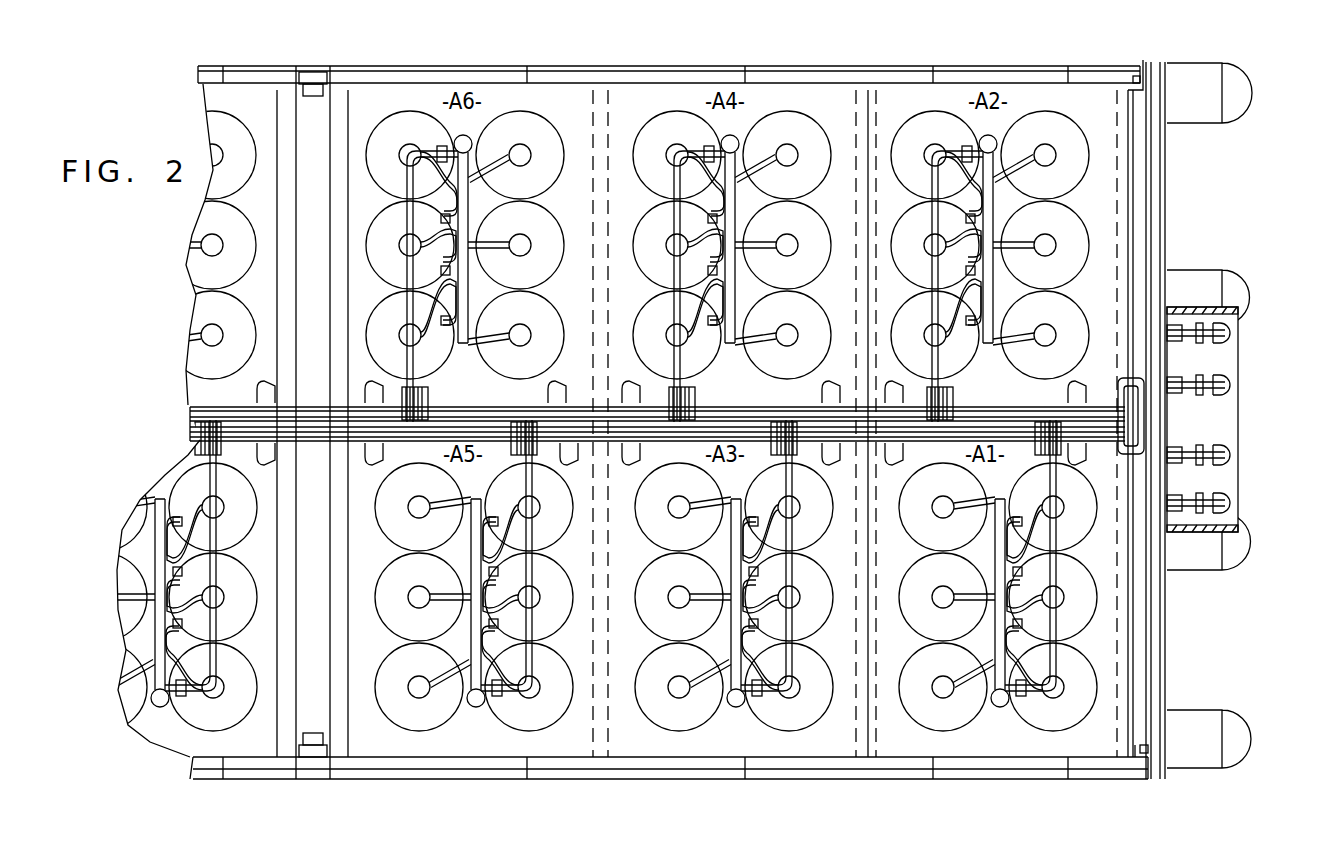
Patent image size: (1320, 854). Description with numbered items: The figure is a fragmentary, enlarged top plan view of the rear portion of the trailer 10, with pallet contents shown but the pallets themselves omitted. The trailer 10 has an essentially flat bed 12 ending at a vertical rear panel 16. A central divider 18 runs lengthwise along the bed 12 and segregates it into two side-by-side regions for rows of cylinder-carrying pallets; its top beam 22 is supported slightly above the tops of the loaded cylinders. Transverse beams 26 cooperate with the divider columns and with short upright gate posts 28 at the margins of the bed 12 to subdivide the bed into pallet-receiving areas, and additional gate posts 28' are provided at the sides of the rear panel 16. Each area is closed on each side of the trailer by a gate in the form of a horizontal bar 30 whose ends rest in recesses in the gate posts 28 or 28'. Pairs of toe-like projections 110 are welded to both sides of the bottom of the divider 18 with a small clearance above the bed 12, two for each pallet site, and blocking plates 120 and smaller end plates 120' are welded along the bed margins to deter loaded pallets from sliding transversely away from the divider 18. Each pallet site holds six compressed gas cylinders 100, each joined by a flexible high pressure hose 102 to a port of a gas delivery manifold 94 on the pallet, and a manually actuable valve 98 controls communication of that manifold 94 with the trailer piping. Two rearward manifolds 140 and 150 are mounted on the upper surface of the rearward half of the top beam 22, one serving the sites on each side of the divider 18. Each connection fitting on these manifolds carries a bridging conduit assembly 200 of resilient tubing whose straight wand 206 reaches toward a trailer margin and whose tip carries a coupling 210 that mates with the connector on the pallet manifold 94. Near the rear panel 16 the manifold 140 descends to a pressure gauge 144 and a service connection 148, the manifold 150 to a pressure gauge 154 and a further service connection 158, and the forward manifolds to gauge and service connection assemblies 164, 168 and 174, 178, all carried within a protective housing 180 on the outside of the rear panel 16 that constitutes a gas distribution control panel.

The trailer 10 is at (1112, 40).
The bed 12 is at (1103, 180).
The rear panel 16 is at (1165, 650).
The central divider 18 is at (190, 410).
The top beam 22 is at (850, 395).
The transverse beam 26 is at (317, 118).
The gate post 28 is at (309, 426).
The gate post 28' is at (1166, 426).
The horizontal bar 30 is at (780, 66).
The gas delivery manifold 94 is at (456, 262).
The manually actuable valve 98 is at (476, 125).
The compressed gas cylinder 100 is at (200, 212).
The flexible high pressure hose 102 is at (493, 163).
The toe-like projection 110 is at (256, 388).
The plate 120 is at (669, 426).
The plate 120' is at (1082, 426).
The rearward manifold 140 is at (770, 445).
The pressure gauge 144 is at (1210, 487).
The service connection 148 is at (1228, 505).
The rearward manifold 150 is at (800, 405).
The pressure gauge 154 is at (1205, 345).
The terminal 158 is at (1228, 332).
The pressure gauge 164 is at (1210, 440).
The service connection 168 is at (1228, 455).
The pressure gauge 174 is at (1205, 398).
The service connection 178 is at (1228, 384).
The protective housing 180 is at (1193, 303).
The bridging conduit assembly 200 is at (430, 350).
The wand 206 is at (410, 215).
The coupling 210 is at (438, 147).